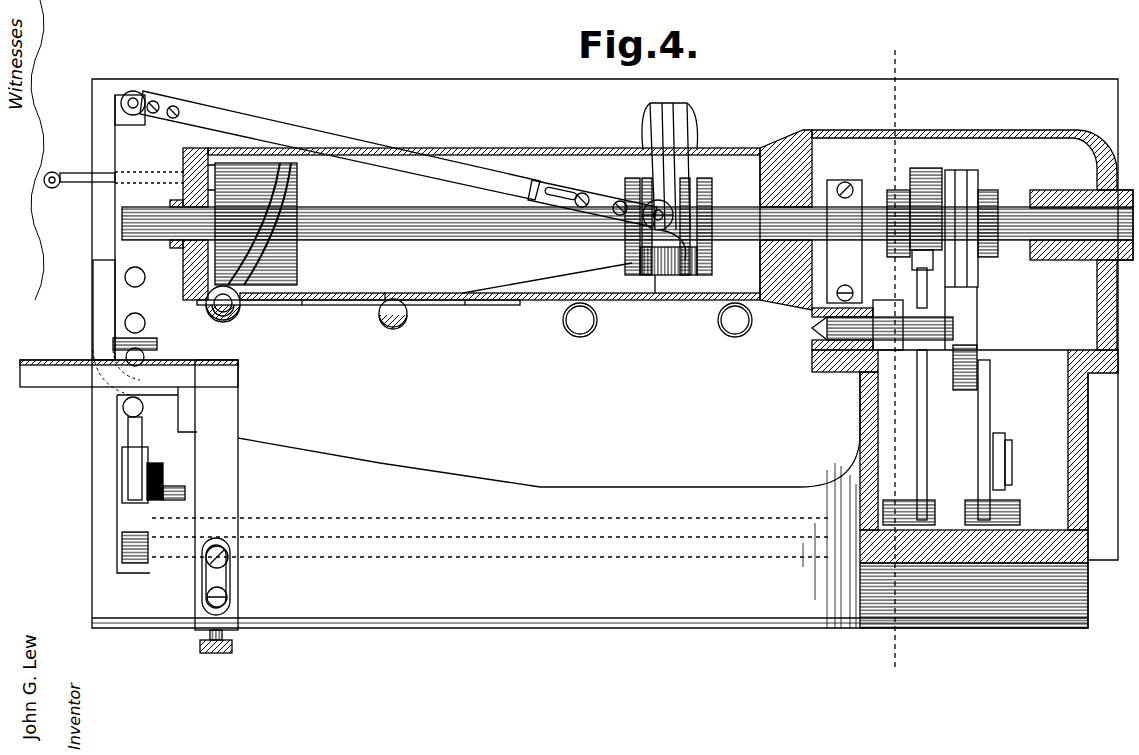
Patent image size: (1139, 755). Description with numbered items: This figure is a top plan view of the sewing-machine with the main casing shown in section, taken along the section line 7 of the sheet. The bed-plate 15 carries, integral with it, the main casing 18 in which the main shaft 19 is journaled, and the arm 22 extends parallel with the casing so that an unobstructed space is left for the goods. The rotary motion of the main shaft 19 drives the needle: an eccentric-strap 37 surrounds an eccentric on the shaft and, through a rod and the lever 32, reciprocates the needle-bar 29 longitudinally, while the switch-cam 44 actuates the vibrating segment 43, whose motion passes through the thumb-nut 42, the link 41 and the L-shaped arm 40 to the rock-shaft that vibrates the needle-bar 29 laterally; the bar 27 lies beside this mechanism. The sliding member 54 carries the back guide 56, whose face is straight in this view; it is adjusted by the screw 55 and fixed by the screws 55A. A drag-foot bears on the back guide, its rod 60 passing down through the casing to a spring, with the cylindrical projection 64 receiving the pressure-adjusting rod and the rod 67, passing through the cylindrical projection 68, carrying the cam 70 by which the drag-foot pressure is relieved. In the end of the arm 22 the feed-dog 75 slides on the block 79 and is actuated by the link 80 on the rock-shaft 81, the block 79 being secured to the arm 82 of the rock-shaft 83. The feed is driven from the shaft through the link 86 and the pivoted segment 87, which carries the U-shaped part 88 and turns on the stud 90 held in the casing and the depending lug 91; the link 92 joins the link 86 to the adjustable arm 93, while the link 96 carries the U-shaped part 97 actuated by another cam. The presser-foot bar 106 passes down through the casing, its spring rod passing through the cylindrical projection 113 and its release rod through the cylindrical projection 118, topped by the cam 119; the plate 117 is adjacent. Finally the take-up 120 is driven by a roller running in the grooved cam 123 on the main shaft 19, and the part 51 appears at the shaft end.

The section line 7 is at (898, 363).
The bed-plate 15 is at (605, 353).
The main casing 18 is at (530, 148).
The main shaft 19 is at (407, 240).
The arm 22 is at (809, 595).
The bar 27 is at (100, 297).
The needle-bar 29 is at (126, 355).
The lever 32 is at (528, 283).
The eccentric-strap 37 is at (852, 210).
The L-shaped arm 40 is at (128, 118).
The link 41 is at (340, 140).
The thumb-nut 42 is at (650, 212).
The vibrating segment 43 is at (662, 160).
The switch-cam 44 is at (712, 195).
The bearing block 51 is at (166, 224).
The sliding member 54 is at (190, 435).
The screw 55 is at (218, 654).
The screws 55A is at (222, 597).
The back guide 56 is at (65, 375).
The rod 60 is at (140, 321).
The cylindrical projection 64 is at (585, 326).
The rod 67 is at (212, 312).
The cylindrical projection 68 is at (236, 310).
The cam 70 is at (302, 306).
The feed-dog 75 is at (122, 492).
The block 79 is at (127, 470).
The link 80 is at (130, 534).
The rock-shaft 81 is at (432, 548).
The arm 82 is at (163, 478).
The rock-shaft 83 is at (264, 518).
The link 86 is at (990, 407).
The pivoted segment 87 is at (963, 390).
The U-shaped part 88 is at (960, 183).
The stud 90 is at (818, 338).
The depending lug 91 is at (940, 308).
The link 92 is at (1005, 463).
The arm 93 is at (1010, 500).
The link 96 is at (927, 455).
The U-shaped part 97 is at (912, 268).
The presser-foot bar 106 is at (126, 411).
The cylindrical projection 113 is at (728, 330).
The plate 117 is at (385, 292).
The cylindrical projection 118 is at (388, 314).
The cam 119 is at (465, 306).
The take-up 120 is at (84, 183).
The cam 123 is at (300, 192).